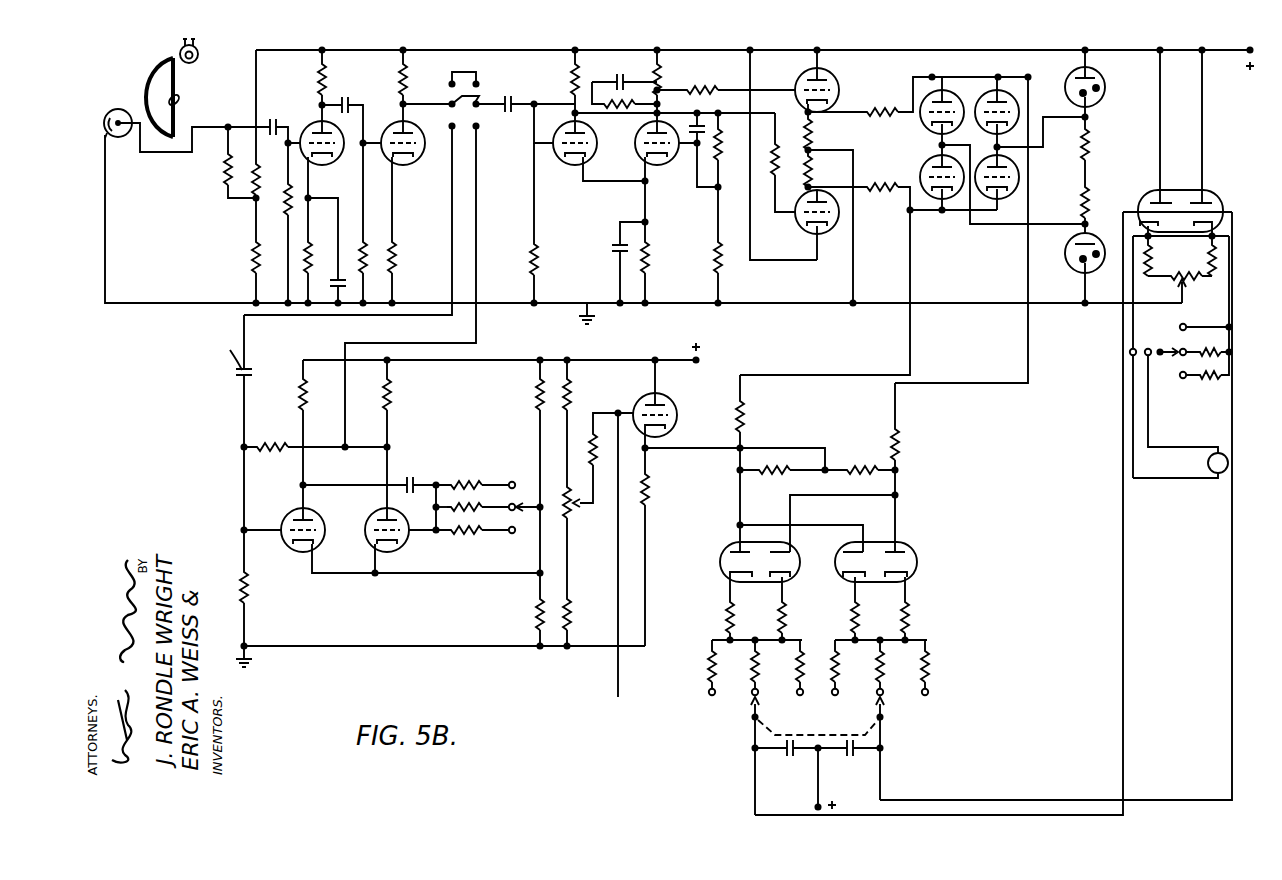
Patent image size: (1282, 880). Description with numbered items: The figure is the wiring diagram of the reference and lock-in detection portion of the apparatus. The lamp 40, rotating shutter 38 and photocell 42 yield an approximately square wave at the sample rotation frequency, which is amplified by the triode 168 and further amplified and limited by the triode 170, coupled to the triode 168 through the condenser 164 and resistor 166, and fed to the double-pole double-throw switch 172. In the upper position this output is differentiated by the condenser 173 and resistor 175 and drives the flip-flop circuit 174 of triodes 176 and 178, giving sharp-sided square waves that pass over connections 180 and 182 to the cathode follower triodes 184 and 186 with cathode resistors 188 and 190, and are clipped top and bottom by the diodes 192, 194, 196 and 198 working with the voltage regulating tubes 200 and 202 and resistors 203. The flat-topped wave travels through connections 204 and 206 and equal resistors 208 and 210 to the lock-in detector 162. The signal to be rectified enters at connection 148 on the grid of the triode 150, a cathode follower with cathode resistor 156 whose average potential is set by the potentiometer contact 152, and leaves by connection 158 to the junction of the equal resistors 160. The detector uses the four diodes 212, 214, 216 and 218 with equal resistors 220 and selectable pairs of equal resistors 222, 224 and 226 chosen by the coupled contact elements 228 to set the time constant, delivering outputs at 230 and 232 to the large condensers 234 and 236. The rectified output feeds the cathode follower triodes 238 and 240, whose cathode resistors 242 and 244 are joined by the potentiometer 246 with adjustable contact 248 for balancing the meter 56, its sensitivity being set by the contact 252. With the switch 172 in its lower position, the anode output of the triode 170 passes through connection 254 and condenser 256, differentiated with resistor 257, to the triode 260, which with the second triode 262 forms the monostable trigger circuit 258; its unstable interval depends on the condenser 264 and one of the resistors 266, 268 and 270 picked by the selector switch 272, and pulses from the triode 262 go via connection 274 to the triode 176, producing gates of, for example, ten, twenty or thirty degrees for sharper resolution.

The rotating shutter 38 is at (148, 96).
The lamp 40 is at (198, 60).
The photocell 42 is at (115, 109).
The condenser 164 is at (352, 104).
The triode 168 is at (306, 128).
The resistor 166 is at (360, 236).
The double-pole double-throw switch 172 is at (445, 92).
The triode 170 is at (428, 140).
The condenser 173 is at (503, 102).
The flip-flop circuit 174 is at (553, 87).
The triode 176 is at (554, 136).
The resistor 175 is at (537, 262).
The triode 178 is at (660, 162).
The connection 180 is at (765, 90).
The triode 184 is at (838, 88).
The cathode resistor 188 is at (818, 125).
The cathode resistor 190 is at (814, 164).
The connection 182 is at (786, 213).
The triode 186 is at (817, 232).
The diode 192 is at (944, 98).
The diode 194 is at (1002, 98).
The diode 196 is at (945, 204).
The diode 198 is at (1012, 190).
The voltage regulating tube 200 is at (1098, 94).
The resistors 203 is at (1090, 190).
The voltage regulating tube 202 is at (1102, 265).
The connection 204 is at (914, 278).
The connection 206 is at (1030, 262).
The triode 238 is at (1142, 212).
The triode 240 is at (1218, 205).
The cathode resistor 242 is at (1154, 258).
The cathode resistor 244 is at (1216, 254).
The potentiometer 246 is at (1178, 280).
The adjustable contact 248 is at (1186, 288).
The contact 252 is at (1172, 350).
The meter 56 is at (1208, 463).
The connection 254 is at (382, 322).
The condenser 256 is at (217, 352).
The connection 274 is at (448, 343).
The resistor 257 is at (250, 590).
The triode 260 is at (290, 522).
The second triode 262 is at (380, 526).
The monostable trigger circuit 258 is at (426, 469).
The condenser 264 is at (443, 475).
The resistor 266 is at (480, 482).
The selector switch 272 is at (518, 476).
The resistor 268 is at (476, 509).
The resistor 270 is at (470, 534).
The potentiometer contact 152 is at (580, 512).
The triode 150 is at (634, 404).
The connection 148 is at (616, 590).
The cathode resistor 156 is at (648, 498).
The connection 158 is at (696, 441).
The equal resistors 160 is at (858, 462).
The equal resistor 210 is at (904, 440).
The lock-in detector 162 is at (917, 494).
The equal resistor 208 is at (746, 416).
The diode 212 is at (722, 558).
The diode 214 is at (822, 540).
The diode 216 is at (848, 540).
The diode 218 is at (914, 558).
The equal resistors 220 is at (910, 610).
The pair of equal resistors 222 is at (832, 670).
The pair of equal resistors 224 is at (884, 660).
The pair of equal resistors 226 is at (922, 660).
The coupled contact elements 228 is at (884, 708).
The output 230 is at (750, 736).
The output 232 is at (884, 738).
The large condenser 234 is at (788, 757).
The large condenser 236 is at (850, 757).